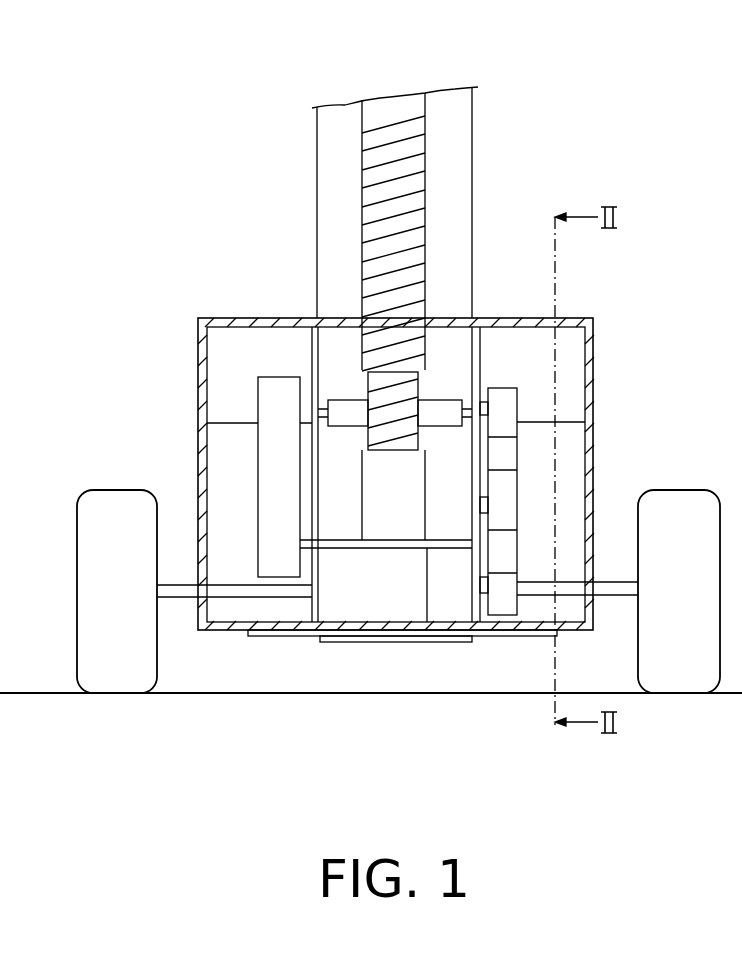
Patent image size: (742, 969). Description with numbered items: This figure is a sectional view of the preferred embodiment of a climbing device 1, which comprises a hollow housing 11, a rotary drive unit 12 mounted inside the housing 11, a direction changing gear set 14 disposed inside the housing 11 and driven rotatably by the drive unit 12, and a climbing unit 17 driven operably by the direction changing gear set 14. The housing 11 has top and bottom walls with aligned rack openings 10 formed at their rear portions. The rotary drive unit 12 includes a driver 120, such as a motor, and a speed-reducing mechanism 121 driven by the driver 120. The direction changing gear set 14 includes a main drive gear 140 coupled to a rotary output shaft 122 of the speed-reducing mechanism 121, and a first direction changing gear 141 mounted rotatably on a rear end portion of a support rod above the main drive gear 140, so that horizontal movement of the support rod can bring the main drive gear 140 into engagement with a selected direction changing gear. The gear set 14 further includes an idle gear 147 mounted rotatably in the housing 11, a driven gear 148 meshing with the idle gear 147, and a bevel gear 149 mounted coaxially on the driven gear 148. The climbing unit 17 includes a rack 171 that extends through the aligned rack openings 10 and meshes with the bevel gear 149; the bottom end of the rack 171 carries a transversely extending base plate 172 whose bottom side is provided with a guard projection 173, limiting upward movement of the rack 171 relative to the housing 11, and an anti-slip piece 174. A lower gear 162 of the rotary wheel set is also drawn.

The climbing device 1 is at (682, 195).
The rack openings 10 is at (333, 643).
The hollow housing 11 is at (287, 318).
The rotary drive unit 12 is at (240, 434).
The direction changing gear set 14 is at (548, 570).
The climbing unit 17 is at (472, 160).
The driver 120 is at (223, 356).
The speed-reducing mechanism 121 is at (276, 378).
The rotary output shaft 122 is at (453, 552).
The main drive gear 140 is at (507, 548).
The first direction changing gear 141 is at (512, 495).
The idle gear 147 is at (510, 455).
The driven gear 148 is at (505, 388).
The bevel gear 149 is at (428, 378).
The lower gear 162 is at (505, 615).
The rack 171 is at (397, 125).
The base plate 172 is at (460, 630).
The guard projection 173 is at (258, 637).
The anti-slip piece 174 is at (323, 640).